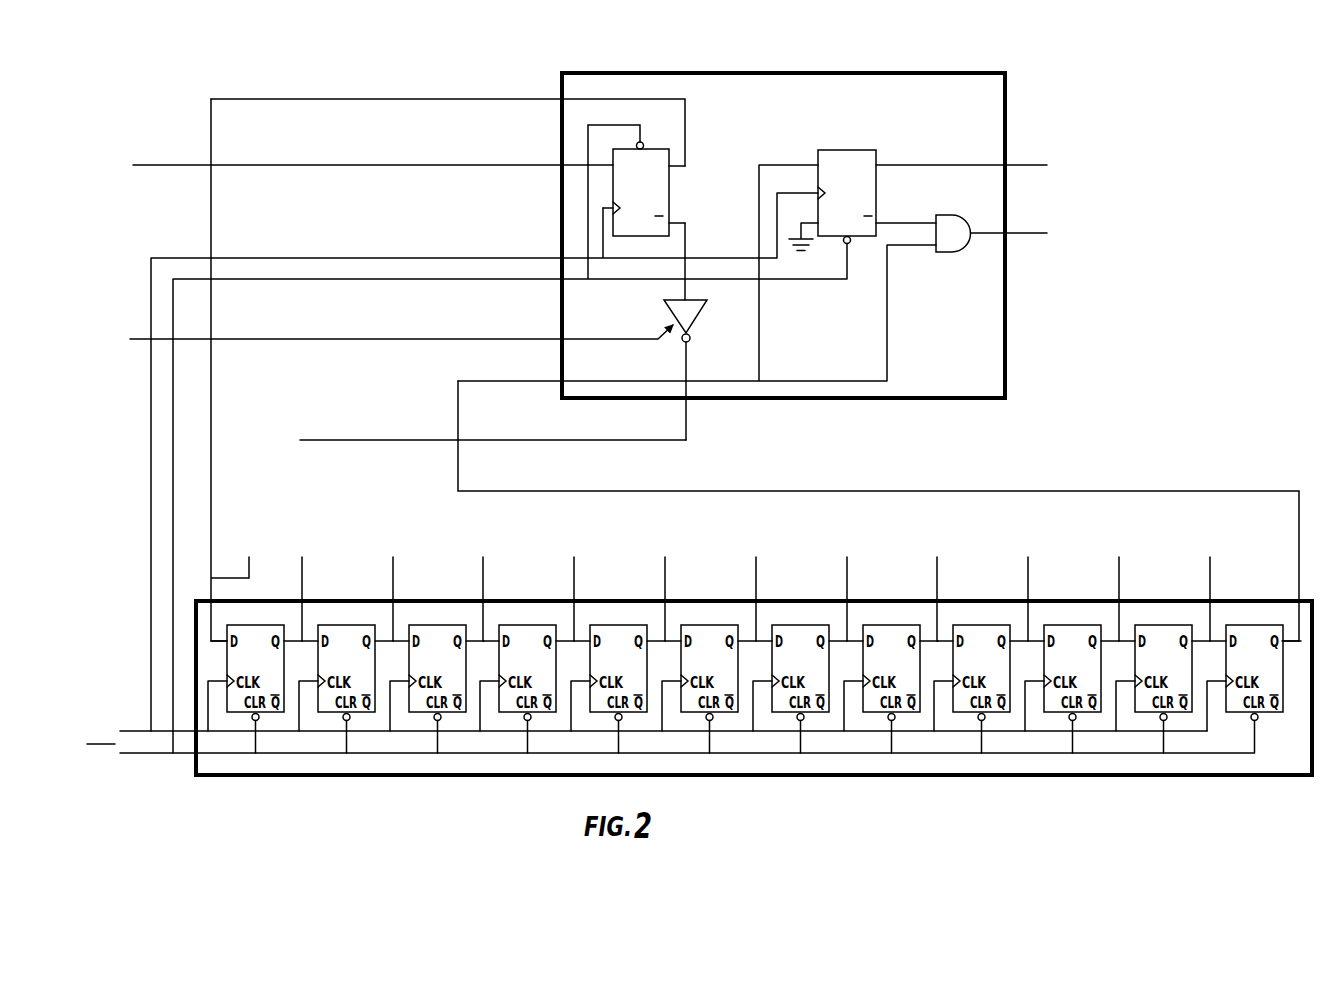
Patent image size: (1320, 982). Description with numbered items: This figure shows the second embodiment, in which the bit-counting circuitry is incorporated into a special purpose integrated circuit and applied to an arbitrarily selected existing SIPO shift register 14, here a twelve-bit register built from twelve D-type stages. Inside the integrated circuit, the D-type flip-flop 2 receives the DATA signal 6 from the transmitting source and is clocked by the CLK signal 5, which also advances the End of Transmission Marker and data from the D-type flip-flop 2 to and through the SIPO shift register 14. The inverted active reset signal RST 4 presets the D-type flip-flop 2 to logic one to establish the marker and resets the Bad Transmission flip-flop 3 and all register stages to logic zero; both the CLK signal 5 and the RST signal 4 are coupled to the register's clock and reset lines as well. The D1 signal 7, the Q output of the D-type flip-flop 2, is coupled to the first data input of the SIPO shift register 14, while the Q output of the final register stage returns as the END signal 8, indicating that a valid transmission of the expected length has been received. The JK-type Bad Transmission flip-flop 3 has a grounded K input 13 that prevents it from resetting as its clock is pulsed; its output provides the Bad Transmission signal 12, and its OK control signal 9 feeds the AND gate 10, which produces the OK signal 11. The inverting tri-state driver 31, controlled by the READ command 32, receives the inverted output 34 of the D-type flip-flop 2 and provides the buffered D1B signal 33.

The D-type flip-flop FF0 2 is at (760, 69).
The JK-type master-slave Bad Transmission flip-flop FFBT 3 is at (845, 146).
The inverted active reset signal RST 4 is at (538, 286).
The clock signal CLK 5 is at (540, 253).
The data input DATA 6 is at (540, 171).
The D1 signal 7 is at (540, 105).
The END signal 8 is at (538, 387).
The OK control signal 9 is at (894, 218).
The AND gate G1 10 is at (945, 213).
The OK signal 11 is at (1027, 228).
The Bad Transmission (BT) signal 12 is at (1027, 160).
The FFBT K input 13 is at (801, 210).
The SIPO shift register 14 is at (709, 785).
The tri-state driver 31 is at (710, 313).
The READ command 32 is at (538, 345).
The D1B signal 33 is at (538, 447).
The inverted output 34 is at (691, 246).